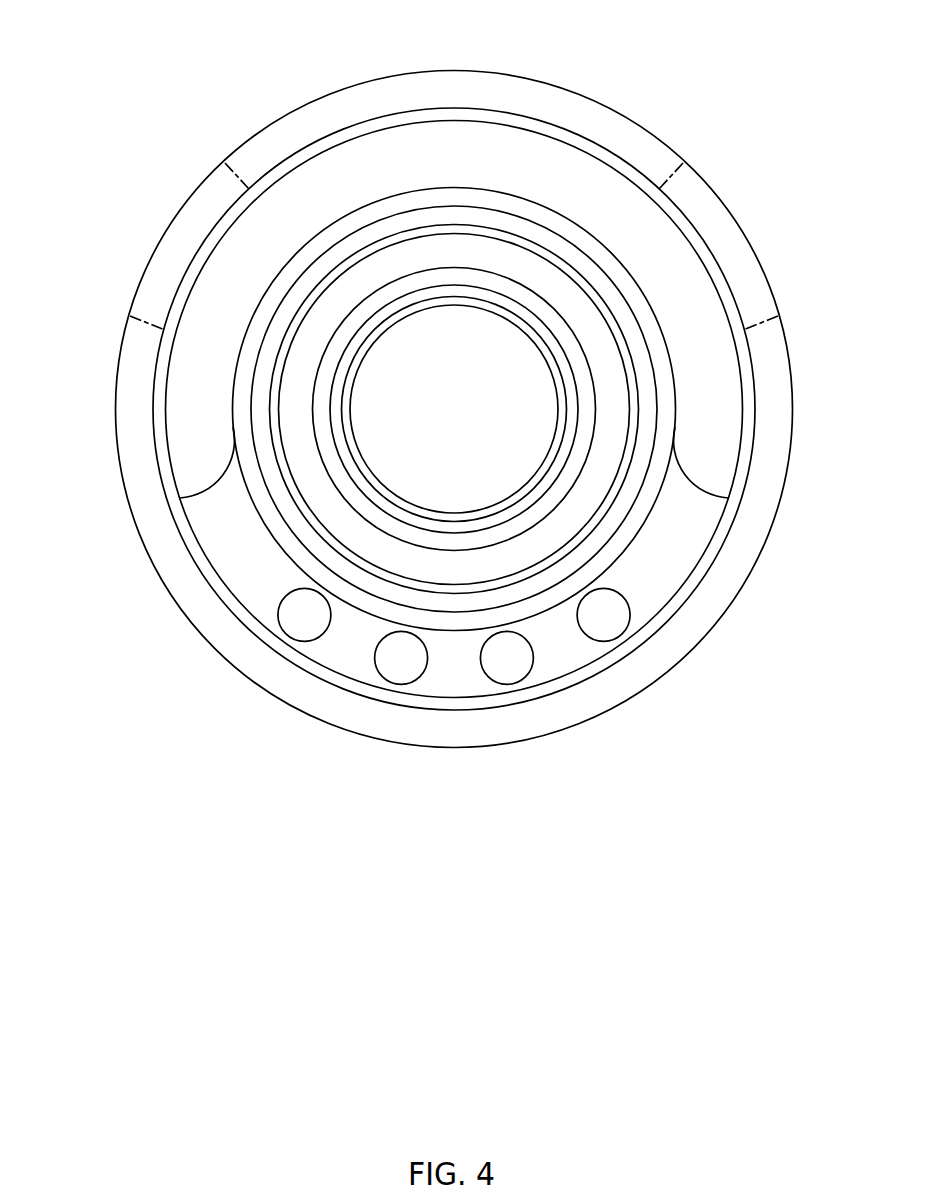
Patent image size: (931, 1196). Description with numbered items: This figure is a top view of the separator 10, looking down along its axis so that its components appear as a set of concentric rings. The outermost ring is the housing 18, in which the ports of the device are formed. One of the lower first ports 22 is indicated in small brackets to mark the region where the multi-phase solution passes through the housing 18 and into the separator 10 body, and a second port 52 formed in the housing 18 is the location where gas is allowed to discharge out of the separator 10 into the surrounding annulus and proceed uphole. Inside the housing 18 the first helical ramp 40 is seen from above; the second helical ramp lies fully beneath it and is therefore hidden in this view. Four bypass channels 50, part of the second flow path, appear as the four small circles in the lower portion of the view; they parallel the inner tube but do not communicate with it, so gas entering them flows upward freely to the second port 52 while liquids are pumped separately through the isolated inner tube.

The separator 10 is at (492, 138).
The lower first port 22 is at (158, 238).
The second port 52 is at (737, 222).
The housing 18 is at (148, 503).
The first helical ramp 40 is at (712, 438).
The bypass channels 50 is at (297, 622).